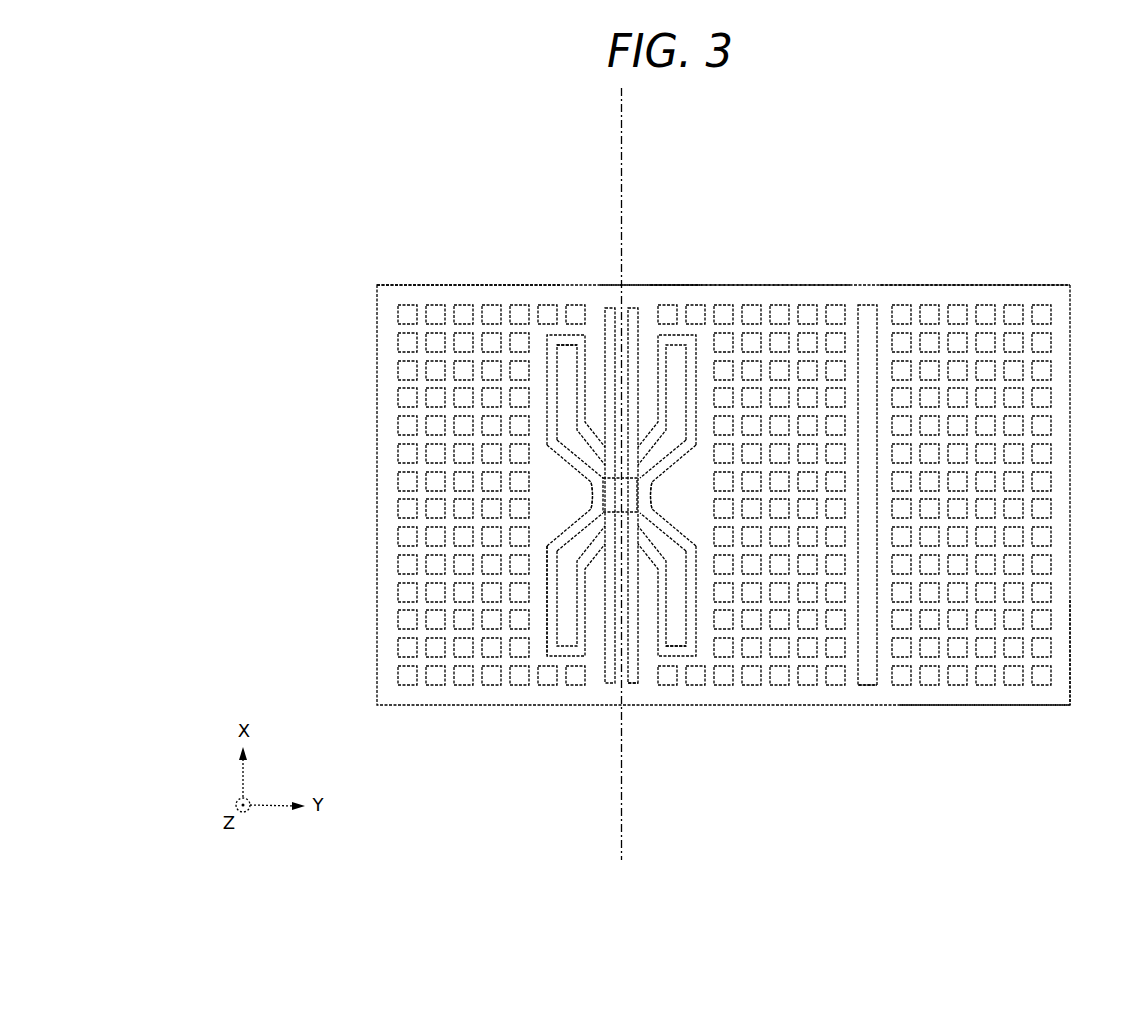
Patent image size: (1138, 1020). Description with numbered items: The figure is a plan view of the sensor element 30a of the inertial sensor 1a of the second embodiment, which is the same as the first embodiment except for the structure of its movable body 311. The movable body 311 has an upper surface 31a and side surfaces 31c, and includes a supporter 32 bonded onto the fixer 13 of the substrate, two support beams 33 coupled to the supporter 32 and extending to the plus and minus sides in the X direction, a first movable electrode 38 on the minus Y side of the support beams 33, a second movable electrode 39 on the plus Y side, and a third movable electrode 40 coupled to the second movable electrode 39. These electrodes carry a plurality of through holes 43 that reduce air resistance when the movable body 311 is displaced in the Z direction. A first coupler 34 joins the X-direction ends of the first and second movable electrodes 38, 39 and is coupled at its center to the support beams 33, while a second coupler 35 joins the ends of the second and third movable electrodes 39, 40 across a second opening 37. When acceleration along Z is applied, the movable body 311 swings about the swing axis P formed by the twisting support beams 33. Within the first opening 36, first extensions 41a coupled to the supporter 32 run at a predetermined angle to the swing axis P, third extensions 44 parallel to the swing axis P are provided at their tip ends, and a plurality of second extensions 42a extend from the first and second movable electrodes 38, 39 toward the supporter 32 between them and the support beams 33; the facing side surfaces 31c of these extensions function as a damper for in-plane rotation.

The inertial sensor 1a is at (1078, 219).
The sensor element 30a is at (909, 281).
The movable body 311 is at (660, 285).
The fixer 13 is at (648, 557).
The supporter 32 is at (602, 494).
The support beams 33 is at (607, 322).
The first coupler 34 is at (635, 315).
The second coupler 35 is at (863, 305).
The first opening 36 is at (628, 688).
The second opening 37 is at (872, 688).
The first movable electrode 38 is at (475, 285).
The second movable electrode 39 is at (716, 285).
The third movable electrode 40 is at (955, 285).
The first extensions 41a is at (583, 458).
The second extensions 42a is at (652, 375).
The through holes 43 is at (405, 305).
The third extensions 44 is at (567, 398).
The upper surface 31a is at (1022, 705).
The side surfaces 31c is at (1072, 692).
The swing axis P is at (623, 100).